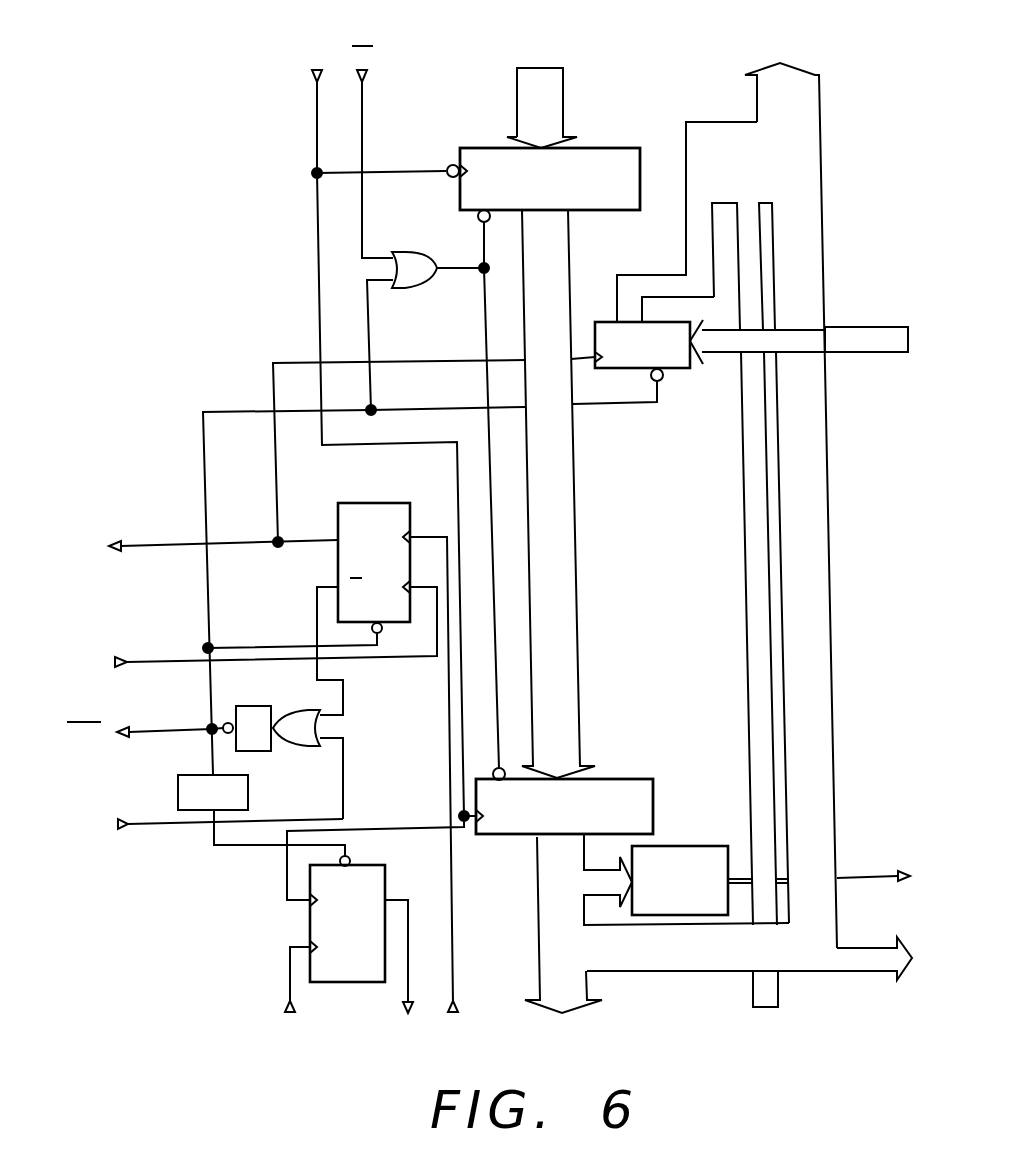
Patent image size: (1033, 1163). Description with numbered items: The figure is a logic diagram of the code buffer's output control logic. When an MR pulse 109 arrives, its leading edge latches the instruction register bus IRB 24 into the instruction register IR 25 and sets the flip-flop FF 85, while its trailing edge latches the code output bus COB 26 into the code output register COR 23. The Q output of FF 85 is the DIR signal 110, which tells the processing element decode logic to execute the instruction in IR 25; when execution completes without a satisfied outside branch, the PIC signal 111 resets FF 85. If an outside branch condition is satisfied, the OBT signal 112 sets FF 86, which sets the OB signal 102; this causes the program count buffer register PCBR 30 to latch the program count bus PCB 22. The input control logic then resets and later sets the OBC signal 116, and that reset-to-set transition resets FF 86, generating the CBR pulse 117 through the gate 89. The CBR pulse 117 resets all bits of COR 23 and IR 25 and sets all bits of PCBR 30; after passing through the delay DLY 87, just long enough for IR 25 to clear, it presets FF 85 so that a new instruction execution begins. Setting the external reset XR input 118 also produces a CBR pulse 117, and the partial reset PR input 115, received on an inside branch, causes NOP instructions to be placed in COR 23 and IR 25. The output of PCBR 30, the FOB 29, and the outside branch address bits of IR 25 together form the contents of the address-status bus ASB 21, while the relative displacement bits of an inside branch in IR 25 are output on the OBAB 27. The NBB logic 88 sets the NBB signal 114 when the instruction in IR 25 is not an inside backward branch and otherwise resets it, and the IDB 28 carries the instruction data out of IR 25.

The MR pulse 109 is at (316, 139).
The partial reset input 115 is at (363, 136).
The COB 26 is at (570, 99).
The COR 23 is at (607, 146).
The ASB 21 is at (813, 104).
The PCB 22 is at (870, 325).
The PCBR 30 is at (690, 376).
The FF 86 is at (364, 503).
The OB signal 102 is at (154, 550).
The OBC signal 116 is at (162, 656).
The CBR pulse 117 is at (162, 728).
The DLY 87 is at (178, 778).
The NOR gate 89 is at (270, 752).
The XR pulse 118 is at (162, 828).
The IRB 24 is at (584, 656).
The FOB 29 is at (742, 642).
The IR 25 is at (618, 776).
The NBB logic 88 is at (678, 854).
The FF 85 is at (372, 871).
The DIR signal 110 is at (408, 964).
The PIC signal 111 is at (288, 996).
The OBT signal 112 is at (456, 989).
The NBB signal 114 is at (856, 876).
The OBAB 27 is at (860, 948).
The IDB 28 is at (536, 916).